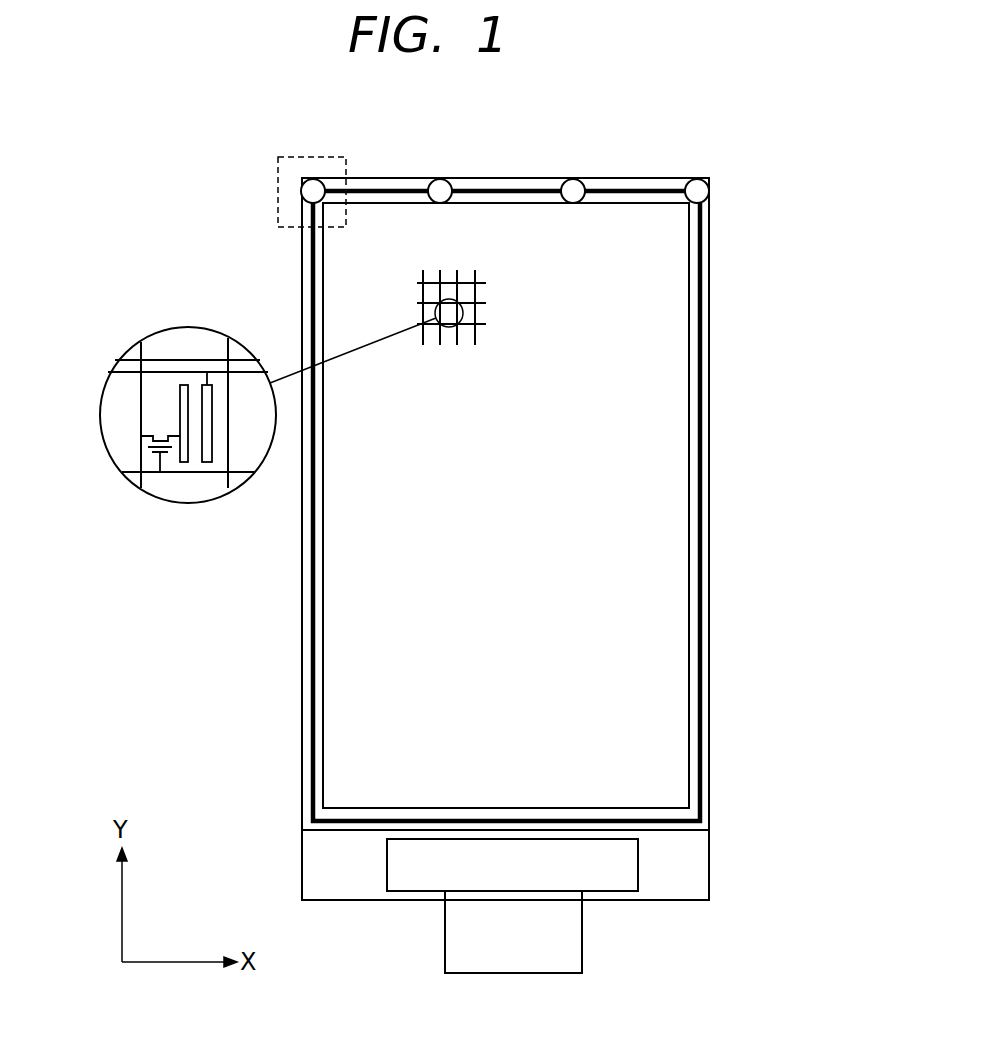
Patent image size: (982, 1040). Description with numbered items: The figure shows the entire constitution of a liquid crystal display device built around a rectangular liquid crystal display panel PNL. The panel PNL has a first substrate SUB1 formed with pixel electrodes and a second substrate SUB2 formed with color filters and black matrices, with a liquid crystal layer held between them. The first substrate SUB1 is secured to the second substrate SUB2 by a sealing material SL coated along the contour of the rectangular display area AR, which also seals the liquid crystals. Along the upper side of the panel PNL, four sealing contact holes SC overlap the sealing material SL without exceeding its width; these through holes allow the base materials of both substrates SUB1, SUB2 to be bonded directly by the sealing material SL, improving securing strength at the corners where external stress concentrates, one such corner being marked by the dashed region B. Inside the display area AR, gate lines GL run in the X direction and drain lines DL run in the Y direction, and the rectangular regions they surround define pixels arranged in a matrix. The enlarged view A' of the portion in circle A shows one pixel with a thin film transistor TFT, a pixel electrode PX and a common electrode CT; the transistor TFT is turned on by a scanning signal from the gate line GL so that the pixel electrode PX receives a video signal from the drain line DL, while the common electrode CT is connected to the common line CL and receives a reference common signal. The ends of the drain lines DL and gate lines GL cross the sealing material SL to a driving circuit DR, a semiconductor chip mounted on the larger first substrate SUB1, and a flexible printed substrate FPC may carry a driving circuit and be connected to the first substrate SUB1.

The liquid crystal display panel PNL is at (540, 465).
The first substrate SUB1 is at (705, 866).
The second substrate SUB2 is at (710, 663).
The sealing material SL is at (701, 577).
The display area AR is at (682, 425).
The sealing contact hole SC is at (317, 180).
The region B is at (300, 186).
The driving circuit DR is at (415, 885).
The flexible printed substrate FPC is at (575, 932).
The drain line DL is at (482, 283).
The gate line GL is at (482, 325).
The common line CL is at (173, 372).
The pixel electrode PX is at (180, 398).
The common electrode CT is at (208, 458).
The thin film transistor TFT is at (148, 452).
The circle A is at (366, 341).
The enlarged view A' is at (157, 405).